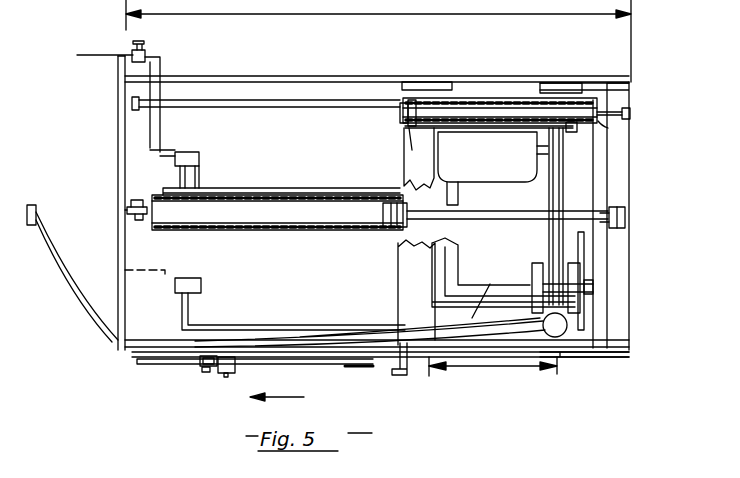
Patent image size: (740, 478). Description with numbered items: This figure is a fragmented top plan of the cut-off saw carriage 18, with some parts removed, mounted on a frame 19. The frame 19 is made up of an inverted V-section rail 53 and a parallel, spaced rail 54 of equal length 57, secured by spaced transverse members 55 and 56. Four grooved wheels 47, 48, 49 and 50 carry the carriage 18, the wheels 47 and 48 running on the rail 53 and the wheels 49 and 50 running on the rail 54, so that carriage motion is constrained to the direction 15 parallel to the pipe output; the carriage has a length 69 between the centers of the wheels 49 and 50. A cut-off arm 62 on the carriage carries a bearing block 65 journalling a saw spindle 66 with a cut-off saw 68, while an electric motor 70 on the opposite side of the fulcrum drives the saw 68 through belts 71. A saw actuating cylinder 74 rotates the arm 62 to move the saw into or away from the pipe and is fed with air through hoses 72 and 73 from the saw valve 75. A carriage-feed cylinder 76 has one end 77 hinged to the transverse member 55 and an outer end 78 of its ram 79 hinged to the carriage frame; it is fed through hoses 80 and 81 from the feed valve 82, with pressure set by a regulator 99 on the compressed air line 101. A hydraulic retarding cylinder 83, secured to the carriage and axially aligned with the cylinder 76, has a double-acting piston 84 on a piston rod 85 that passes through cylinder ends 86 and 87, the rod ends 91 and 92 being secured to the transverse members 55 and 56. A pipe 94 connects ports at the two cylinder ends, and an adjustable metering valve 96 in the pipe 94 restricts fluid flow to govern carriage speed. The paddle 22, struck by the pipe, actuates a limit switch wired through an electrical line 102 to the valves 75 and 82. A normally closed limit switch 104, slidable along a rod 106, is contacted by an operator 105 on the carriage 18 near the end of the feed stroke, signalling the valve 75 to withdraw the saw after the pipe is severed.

The direction of motion 15 is at (304, 397).
The cut-off saw carriage 18 is at (411, 157).
The frame 19 is at (284, 72).
The paddle 22 is at (50, 207).
The grooved wheel 47 is at (436, 64).
The grooved wheel 48 is at (548, 83).
The grooved wheel 49 is at (423, 370).
The grooved wheel 50 is at (568, 358).
The inverted V-section rail 53 is at (252, 62).
The rail 54 is at (229, 346).
The transverse member 55 is at (130, 150).
The transverse member 56 is at (617, 173).
The length 57 is at (378, 41).
The cut-off arm 62 is at (503, 268).
The bearing block 65 is at (536, 264).
The saw spindle 66 is at (593, 287).
The cut-off saw 68 is at (586, 248).
The length 69 is at (480, 372).
The electric motor 70 is at (493, 168).
The belts 71 is at (560, 183).
The hose 72 is at (452, 318).
The hose 73 is at (490, 270).
The saw actuating cylinder 74 is at (568, 330).
The saw valve 75 is at (201, 286).
The carriage-feed cylinder 76 is at (240, 231).
The end of cylinder 77 is at (152, 214).
The outer end of ram 78 is at (627, 213).
The ram 79 is at (498, 202).
The hose 80 is at (366, 192).
The hose 81 is at (180, 178).
The feed valve 82 is at (199, 158).
The hydraulic retarding cylinder 83 is at (474, 98).
The double-acting piston 84 is at (400, 104).
The piston rod 85 is at (186, 108).
The end of cylinder 86 is at (402, 116).
The end of cylinder 87 is at (608, 128).
The end of piston rod 91 is at (132, 103).
The end of piston rod 92 is at (630, 113).
The pipe 94 is at (410, 134).
The adjustable metering valve 96 is at (572, 132).
The regulator 99 is at (150, 47).
The line 101 is at (86, 54).
The electrical line 102 is at (66, 283).
The limit switch 104 is at (216, 378).
The operator 105 is at (396, 378).
The rod 106 is at (282, 372).